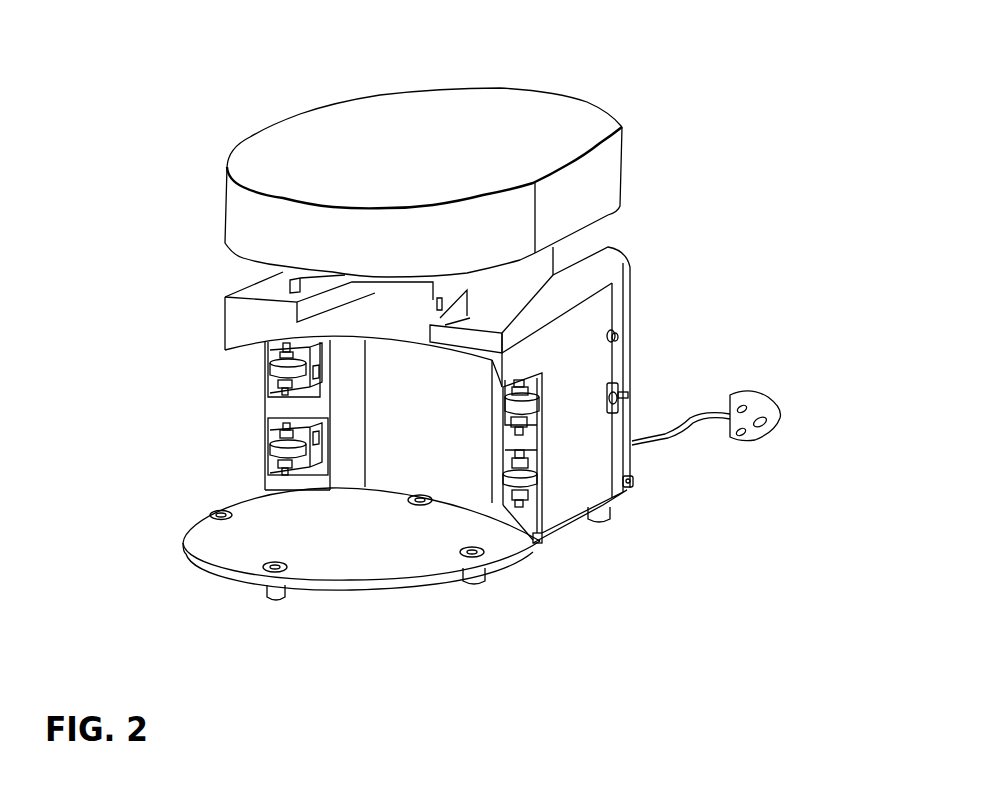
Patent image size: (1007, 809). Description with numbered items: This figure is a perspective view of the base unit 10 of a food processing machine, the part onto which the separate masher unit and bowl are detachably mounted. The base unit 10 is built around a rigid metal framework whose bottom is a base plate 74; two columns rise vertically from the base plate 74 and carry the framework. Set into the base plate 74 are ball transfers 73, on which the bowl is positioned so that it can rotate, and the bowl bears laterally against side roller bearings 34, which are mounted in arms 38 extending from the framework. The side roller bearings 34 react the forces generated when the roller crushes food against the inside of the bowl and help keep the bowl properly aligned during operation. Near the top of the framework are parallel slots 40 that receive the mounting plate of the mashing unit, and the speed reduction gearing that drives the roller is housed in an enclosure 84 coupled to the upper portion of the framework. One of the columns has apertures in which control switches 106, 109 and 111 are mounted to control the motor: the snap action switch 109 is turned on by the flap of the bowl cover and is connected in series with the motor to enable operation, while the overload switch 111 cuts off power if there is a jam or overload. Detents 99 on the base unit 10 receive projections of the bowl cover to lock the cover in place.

The base unit 10 is at (586, 79).
The enclosure 84 is at (513, 154).
The parallel slots 40 is at (430, 312).
The side roller bearings 34 is at (270, 378).
The detents 99 is at (242, 492).
The ball transfers 73 is at (258, 567).
The base plate 74 is at (308, 540).
The arms 38 is at (319, 374).
The snap action switch 109 is at (626, 330).
The control switch 106 is at (638, 391).
The overload switch 111 is at (634, 481).